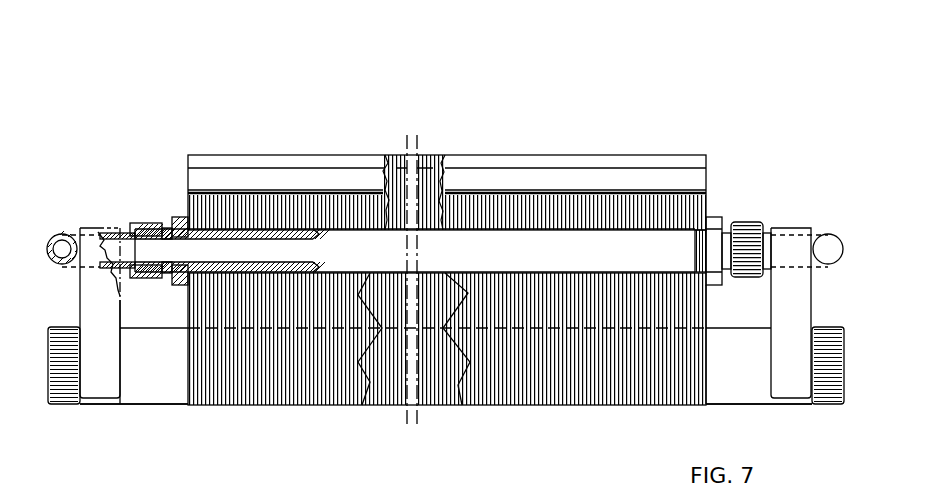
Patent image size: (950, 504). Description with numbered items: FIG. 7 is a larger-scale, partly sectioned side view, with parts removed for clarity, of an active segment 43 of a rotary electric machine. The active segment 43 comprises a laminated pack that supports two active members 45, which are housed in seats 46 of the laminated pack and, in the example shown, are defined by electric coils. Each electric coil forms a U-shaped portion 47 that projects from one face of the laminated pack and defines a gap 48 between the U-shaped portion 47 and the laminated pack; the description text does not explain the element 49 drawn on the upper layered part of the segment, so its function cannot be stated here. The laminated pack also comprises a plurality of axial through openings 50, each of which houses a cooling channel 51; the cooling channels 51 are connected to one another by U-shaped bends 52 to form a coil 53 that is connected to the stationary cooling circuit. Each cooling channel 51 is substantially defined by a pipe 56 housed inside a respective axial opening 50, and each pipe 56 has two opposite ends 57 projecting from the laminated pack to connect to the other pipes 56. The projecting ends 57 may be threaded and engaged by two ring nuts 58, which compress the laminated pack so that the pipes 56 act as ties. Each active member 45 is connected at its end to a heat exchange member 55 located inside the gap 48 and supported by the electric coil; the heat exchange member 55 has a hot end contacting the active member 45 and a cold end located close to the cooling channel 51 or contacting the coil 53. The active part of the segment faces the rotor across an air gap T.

The active segment 43 is at (758, 139).
The active member 45 is at (751, 396).
The seat 46 is at (578, 330).
The U-shaped portion 47 is at (44, 387).
The gap 48 is at (145, 370).
The housing top layer 49 is at (582, 175).
The axial through opening 50 is at (575, 260).
The cooling channel 51 is at (485, 247).
The U-shaped bend 52 is at (62, 236).
The coil 53 is at (770, 210).
The heat exchange member 55 is at (98, 310).
The pipe 56 is at (647, 240).
The end 57 is at (157, 218).
The ring nut 58 is at (175, 215).
The air gap T is at (324, 410).